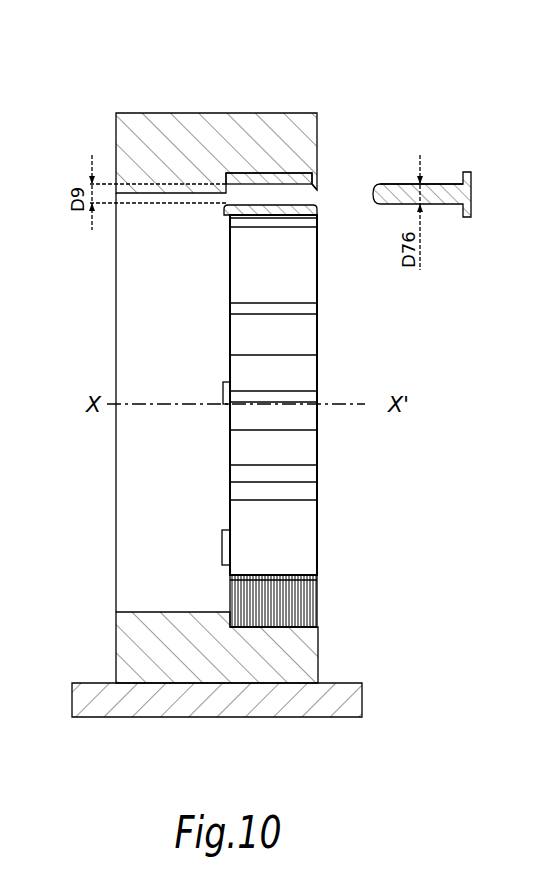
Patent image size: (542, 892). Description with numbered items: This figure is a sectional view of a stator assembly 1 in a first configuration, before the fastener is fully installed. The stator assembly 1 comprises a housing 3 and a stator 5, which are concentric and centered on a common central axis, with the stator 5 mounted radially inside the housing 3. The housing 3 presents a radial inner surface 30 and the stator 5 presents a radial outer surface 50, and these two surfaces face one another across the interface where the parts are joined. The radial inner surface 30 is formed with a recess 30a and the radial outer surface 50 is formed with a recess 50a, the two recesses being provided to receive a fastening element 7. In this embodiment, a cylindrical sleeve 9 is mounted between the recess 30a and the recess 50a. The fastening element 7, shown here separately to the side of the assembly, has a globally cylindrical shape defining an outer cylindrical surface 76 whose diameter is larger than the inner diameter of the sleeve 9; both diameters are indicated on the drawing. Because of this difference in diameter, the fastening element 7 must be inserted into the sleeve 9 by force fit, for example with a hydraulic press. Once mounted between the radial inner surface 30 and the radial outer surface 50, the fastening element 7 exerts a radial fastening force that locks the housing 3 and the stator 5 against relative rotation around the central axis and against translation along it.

The stator assembly 1 is at (383, 66).
The housing 3 is at (186, 130).
The stator 5 is at (285, 285).
The fastening element 7 is at (445, 193).
The cylindrical sleeve 9 is at (250, 178).
The radial inner surface 30 is at (270, 620).
The recess 30a is at (305, 179).
The radial outer surface 50 is at (290, 632).
The recess 50a is at (277, 203).
The outer cylindrical surface 76 is at (399, 180).